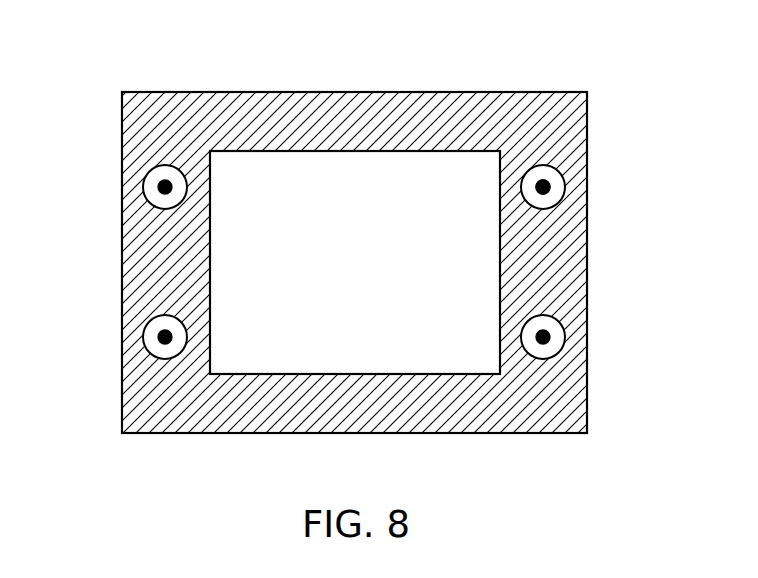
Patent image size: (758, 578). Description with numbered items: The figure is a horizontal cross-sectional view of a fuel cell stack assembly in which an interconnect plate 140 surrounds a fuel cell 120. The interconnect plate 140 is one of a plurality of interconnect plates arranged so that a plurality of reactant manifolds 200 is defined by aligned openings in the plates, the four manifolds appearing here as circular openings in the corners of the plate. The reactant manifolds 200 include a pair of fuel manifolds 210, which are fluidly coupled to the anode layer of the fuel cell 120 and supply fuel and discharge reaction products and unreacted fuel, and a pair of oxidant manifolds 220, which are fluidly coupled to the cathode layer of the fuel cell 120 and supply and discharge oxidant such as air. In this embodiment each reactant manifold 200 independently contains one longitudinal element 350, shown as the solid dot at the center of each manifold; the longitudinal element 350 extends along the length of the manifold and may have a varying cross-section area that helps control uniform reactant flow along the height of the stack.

The interconnect plate 140 is at (378, 92).
The fuel cell 120 is at (238, 273).
The reactant manifold 200 is at (517, 178).
The oxidant manifold 220 is at (187, 188).
The longitudinal element 350 is at (548, 186).
The fuel manifold 210 is at (521, 335).